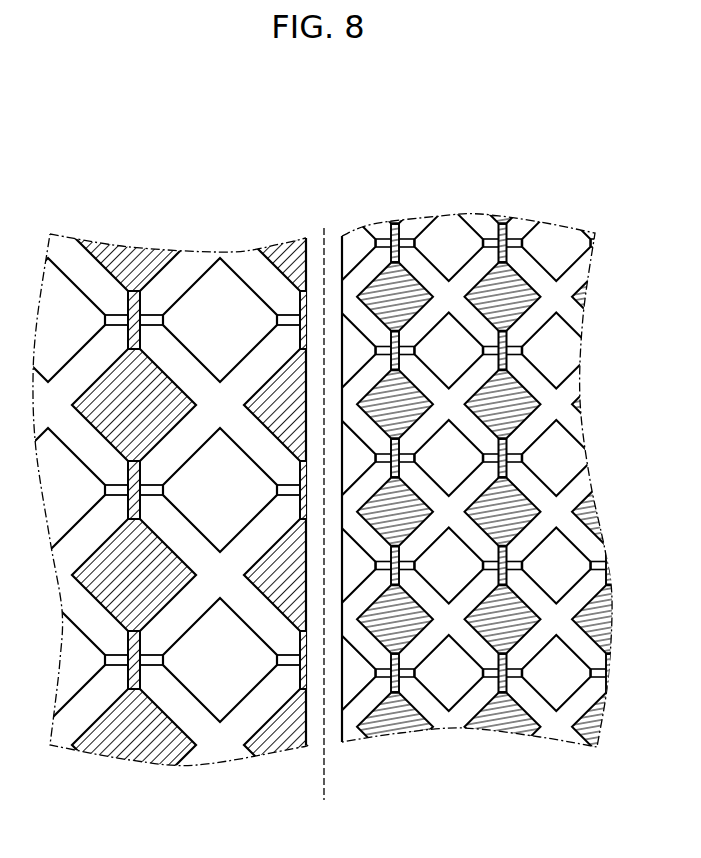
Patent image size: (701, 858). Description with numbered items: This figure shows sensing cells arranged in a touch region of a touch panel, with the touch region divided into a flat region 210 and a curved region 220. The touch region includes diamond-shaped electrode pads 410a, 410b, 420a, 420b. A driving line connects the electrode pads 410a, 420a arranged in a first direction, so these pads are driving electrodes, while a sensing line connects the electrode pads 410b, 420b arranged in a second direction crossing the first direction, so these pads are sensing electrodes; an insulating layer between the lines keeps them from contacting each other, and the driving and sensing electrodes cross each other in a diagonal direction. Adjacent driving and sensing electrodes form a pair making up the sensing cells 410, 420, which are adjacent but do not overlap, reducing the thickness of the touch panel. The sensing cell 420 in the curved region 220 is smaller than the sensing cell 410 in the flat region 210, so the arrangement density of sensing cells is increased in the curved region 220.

The flat region 210 is at (50, 785).
The curved region 220 is at (597, 785).
The sensing cell 410 is at (184, 475).
The electrode pad 410a is at (207, 300).
The electrode pad 410b is at (120, 373).
The sensing cell 420 is at (477, 440).
The electrode pad 420a is at (457, 228).
The electrode pad 420b is at (378, 292).